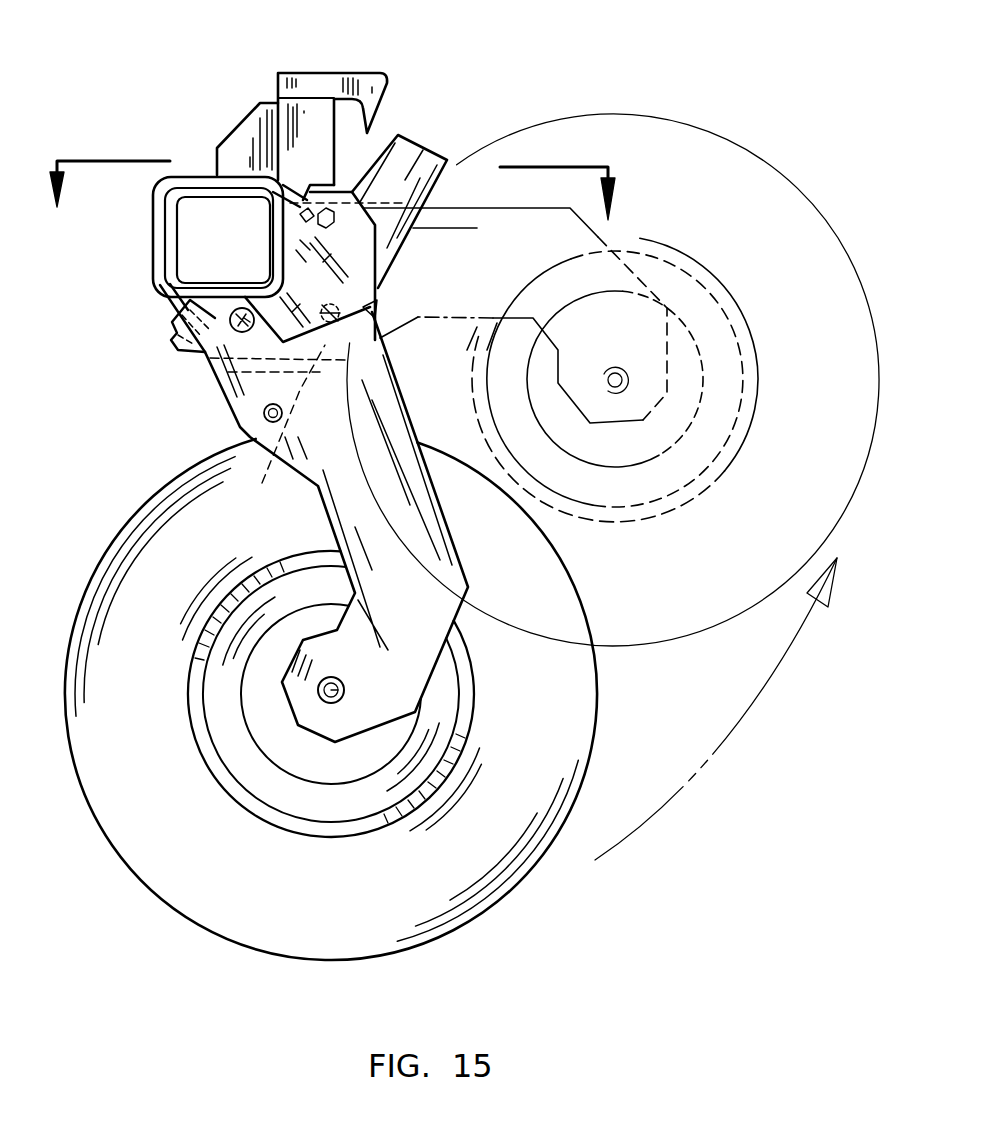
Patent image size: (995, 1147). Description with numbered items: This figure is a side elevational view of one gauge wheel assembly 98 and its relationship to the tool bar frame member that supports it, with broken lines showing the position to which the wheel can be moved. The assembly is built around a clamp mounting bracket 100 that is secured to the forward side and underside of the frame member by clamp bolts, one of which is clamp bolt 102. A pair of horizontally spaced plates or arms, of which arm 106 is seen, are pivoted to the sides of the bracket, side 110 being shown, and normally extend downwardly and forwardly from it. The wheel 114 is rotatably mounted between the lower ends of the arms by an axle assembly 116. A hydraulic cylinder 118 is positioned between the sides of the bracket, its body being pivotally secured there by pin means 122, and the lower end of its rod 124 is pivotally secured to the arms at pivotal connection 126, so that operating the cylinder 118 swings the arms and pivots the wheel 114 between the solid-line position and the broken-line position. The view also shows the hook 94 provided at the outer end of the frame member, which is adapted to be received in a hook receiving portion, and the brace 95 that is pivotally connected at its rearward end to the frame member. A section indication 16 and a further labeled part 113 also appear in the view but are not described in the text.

The section line 16- 16 is at (332, 170).
The hook 94 is at (367, 74).
The brace 95 is at (193, 182).
The gauge wheel assembly 98 is at (160, 435).
The clamp mounting bracket 100 is at (357, 183).
The clamp bolt 102 is at (180, 180).
The plate or arm 106 is at (378, 407).
The side of clamp mounting bracket 110 is at (360, 257).
The latch lever 113 is at (242, 327).
The wheel 114 is at (508, 882).
The axle assembly 116 is at (344, 683).
The hydraulic cylinder 118 is at (430, 153).
The pin means 122 is at (380, 302).
The rod 124 is at (232, 396).
The pivotal connection 126 is at (274, 429).